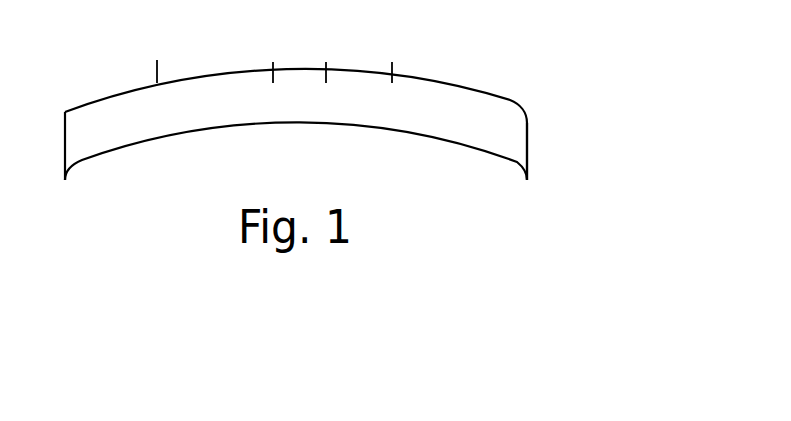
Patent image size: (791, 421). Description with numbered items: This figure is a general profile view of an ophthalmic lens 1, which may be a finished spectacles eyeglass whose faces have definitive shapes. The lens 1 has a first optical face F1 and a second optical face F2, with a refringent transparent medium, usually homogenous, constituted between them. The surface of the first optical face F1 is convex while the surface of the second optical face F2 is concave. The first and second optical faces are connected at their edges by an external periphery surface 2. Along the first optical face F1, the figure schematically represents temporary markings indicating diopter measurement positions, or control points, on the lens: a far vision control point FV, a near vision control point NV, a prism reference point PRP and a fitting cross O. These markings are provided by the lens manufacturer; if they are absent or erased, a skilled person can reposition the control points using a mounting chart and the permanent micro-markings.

The ophthalmic lens 1 is at (80, 125).
The external periphery surface 2 is at (527, 143).
The first optical face F1 is at (473, 88).
The second optical face F2 is at (468, 146).
The near vision control point NV is at (153, 60).
The prism reference point PRP is at (266, 59).
The fitting cross O is at (325, 59).
The far vision control point FV is at (391, 59).